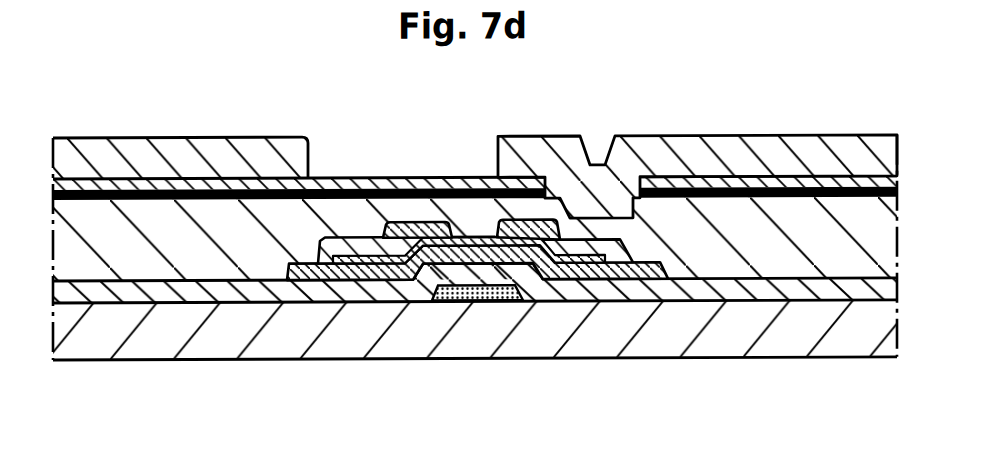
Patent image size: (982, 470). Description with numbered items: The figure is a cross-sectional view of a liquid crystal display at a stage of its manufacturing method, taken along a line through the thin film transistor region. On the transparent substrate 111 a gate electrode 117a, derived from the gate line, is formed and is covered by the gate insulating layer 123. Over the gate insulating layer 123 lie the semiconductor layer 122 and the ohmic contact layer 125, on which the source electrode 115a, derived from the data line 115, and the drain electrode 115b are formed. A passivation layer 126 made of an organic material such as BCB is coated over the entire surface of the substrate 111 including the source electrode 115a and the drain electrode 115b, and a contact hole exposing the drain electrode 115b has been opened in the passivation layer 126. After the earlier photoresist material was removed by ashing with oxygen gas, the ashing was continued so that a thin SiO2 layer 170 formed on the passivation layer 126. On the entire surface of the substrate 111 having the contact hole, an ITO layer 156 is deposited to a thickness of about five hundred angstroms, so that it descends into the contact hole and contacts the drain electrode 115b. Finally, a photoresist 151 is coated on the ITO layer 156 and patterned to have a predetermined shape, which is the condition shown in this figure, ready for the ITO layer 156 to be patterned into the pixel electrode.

The transparent substrate 111 is at (865, 340).
The gate insulating layer 123 is at (147, 290).
The gate electrode 117a is at (516, 302).
The semiconductor layer 122 is at (408, 283).
The data line 115 is at (317, 266).
The source electrode 115a is at (423, 223).
The drain electrode 115b is at (538, 221).
The ohmic contact layer 125 is at (613, 270).
The passivation layer 126 is at (763, 264).
The photoresist 151 is at (688, 150).
The ITO layer 156 is at (103, 190).
The thin SiO2 layer 170 is at (257, 190).